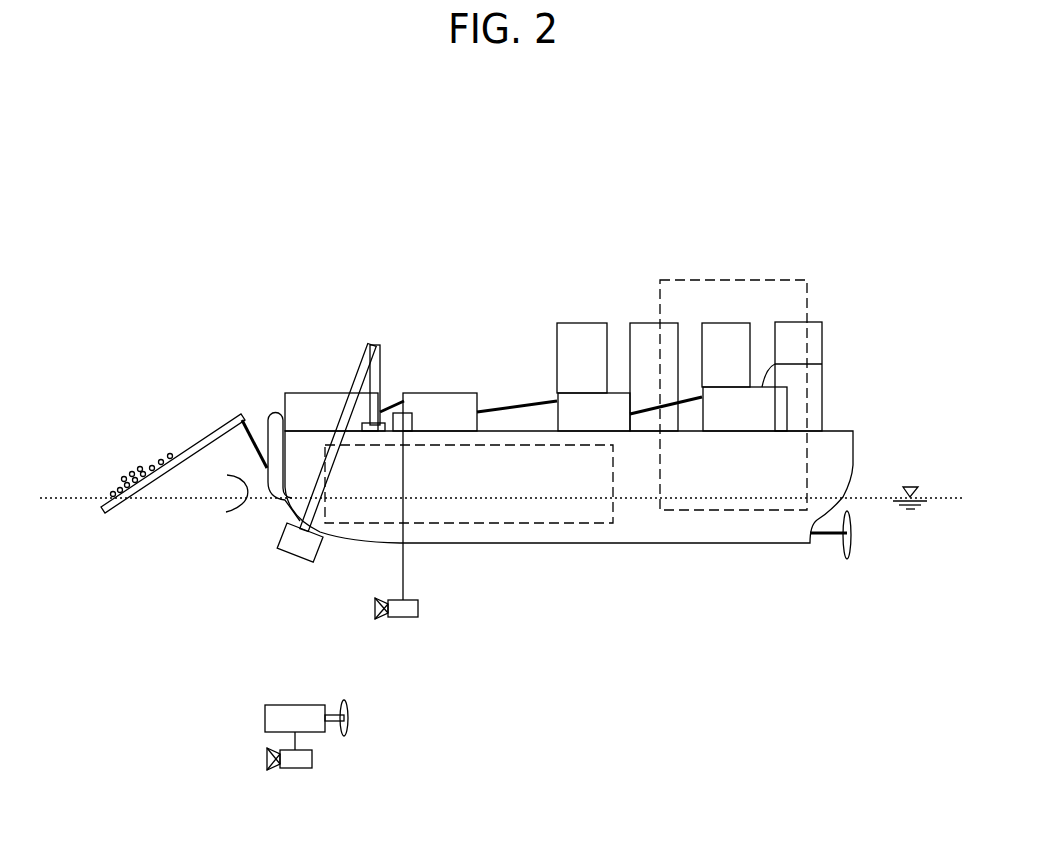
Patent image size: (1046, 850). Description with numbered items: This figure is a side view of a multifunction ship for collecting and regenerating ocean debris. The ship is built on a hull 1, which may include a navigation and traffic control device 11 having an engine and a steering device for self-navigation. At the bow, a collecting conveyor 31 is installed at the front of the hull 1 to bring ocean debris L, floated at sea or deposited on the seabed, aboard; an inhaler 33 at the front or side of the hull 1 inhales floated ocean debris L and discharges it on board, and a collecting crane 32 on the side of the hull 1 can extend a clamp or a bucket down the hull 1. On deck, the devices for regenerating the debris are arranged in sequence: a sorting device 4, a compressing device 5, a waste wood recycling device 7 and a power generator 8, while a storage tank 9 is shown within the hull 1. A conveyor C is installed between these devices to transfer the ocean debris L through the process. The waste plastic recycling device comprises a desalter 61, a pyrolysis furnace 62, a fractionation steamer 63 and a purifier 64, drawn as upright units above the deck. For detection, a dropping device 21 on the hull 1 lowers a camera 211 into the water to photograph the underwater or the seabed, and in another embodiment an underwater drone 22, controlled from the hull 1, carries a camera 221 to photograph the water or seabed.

The hull 1 is at (668, 552).
The sorting device 4 is at (300, 393).
The compressing device 5 is at (461, 393).
The waste wood recycling device 7 is at (583, 393).
The power generator 8 is at (822, 364).
The storage tank 9 is at (552, 523).
The navigation and traffic control device 11 is at (778, 281).
The dropping device 21 is at (420, 573).
The camera 211 is at (407, 618).
The underwater drone 22 is at (292, 695).
The camera 221 is at (300, 769).
The collecting conveyor 31 is at (183, 450).
The collecting crane 32 is at (388, 377).
The inhaler 33 is at (267, 503).
The desalter 61 is at (582, 323).
The pyrolysis furnace 62 is at (655, 323).
The fractionation steamer 63 is at (727, 323).
The purifier 64 is at (798, 322).
The ocean debris L is at (134, 478).
The conveyor C is at (400, 413).